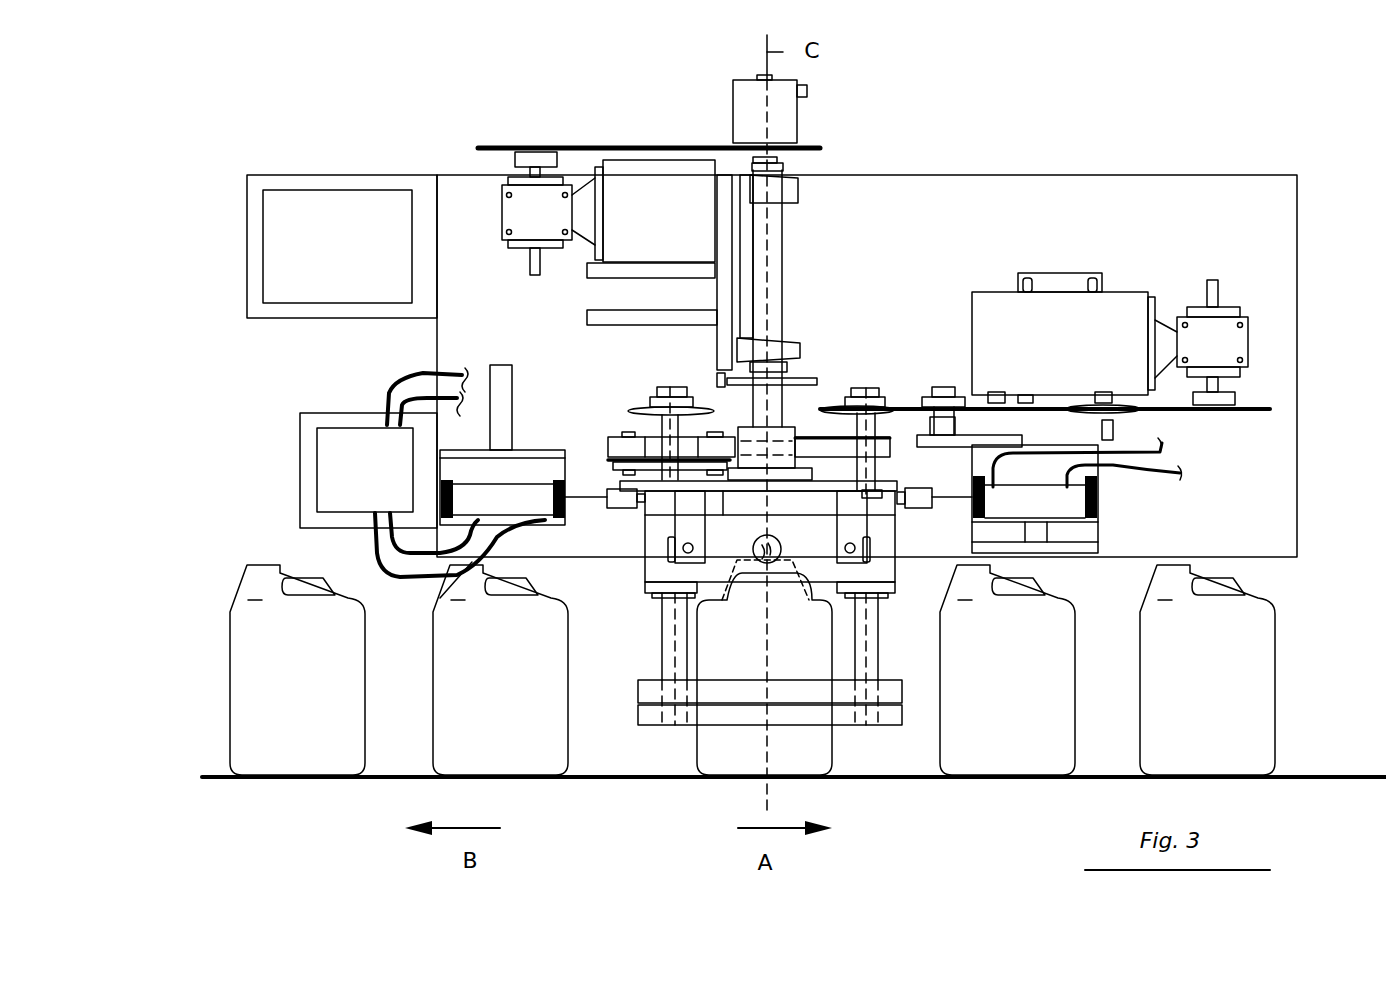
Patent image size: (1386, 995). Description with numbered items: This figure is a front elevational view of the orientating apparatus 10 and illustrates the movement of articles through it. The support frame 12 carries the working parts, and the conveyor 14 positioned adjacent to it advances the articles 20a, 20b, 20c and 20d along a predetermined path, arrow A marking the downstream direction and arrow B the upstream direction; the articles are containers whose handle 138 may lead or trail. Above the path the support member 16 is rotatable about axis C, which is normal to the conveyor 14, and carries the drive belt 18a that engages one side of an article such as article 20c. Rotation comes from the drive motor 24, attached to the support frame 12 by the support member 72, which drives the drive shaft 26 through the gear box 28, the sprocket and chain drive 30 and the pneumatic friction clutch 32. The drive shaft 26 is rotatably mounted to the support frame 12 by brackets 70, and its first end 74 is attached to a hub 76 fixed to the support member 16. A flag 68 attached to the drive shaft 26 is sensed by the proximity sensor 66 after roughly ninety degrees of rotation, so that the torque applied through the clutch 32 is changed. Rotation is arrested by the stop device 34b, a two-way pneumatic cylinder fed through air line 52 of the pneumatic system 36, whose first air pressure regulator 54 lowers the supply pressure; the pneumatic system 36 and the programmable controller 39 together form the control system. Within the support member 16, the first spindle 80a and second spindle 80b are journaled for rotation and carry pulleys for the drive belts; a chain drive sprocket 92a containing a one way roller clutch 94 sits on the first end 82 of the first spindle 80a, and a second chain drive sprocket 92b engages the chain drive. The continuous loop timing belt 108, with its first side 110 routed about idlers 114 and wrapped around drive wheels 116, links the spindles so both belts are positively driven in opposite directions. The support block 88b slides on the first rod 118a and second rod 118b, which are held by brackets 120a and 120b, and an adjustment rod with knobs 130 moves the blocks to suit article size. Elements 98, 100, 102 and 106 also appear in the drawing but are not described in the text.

The orientating apparatus 10 is at (870, 282).
The support frame 12 is at (1287, 193).
The conveyor 14 is at (410, 780).
The support member 16 is at (632, 483).
The drive belt 18a is at (642, 698).
The article 20a is at (232, 670).
The article 20b is at (446, 658).
The article 20c is at (810, 752).
The article 20d is at (1058, 672).
The drive motor 24 is at (667, 175).
The drive shaft 26 is at (782, 262).
The gear box 28 is at (502, 218).
The sprocket and chain drive 30 is at (688, 146).
The clutch 32 is at (800, 103).
The stop device 34b is at (1053, 503).
The pneumatic system 36 is at (317, 460).
The programmable controller 39 is at (297, 190).
The air line 52 is at (410, 385).
The first air pressure regulator 54 is at (400, 380).
The proximity sensor 66 is at (717, 327).
The flag 68 is at (825, 403).
The brackets 70 is at (800, 190).
The support member 72 is at (590, 278).
The first end of shaft 74 is at (755, 425).
The hub 76 is at (740, 428).
The first spindle 80a is at (662, 655).
The second spindle 80b is at (876, 637).
The first end of spindle 82 is at (660, 393).
The second longitudinally extending support block 88b is at (645, 567).
The chain drive sprocket 92a is at (658, 422).
The chain drive sprocket 92b is at (862, 385).
The one way roller clutch 94 is at (628, 407).
The motor 98 is at (1124, 294).
The gear box 100 is at (1248, 340).
The mounting plate 102 is at (1272, 405).
The block 106 is at (1113, 432).
The continuous loop timing belt 108 is at (655, 482).
The first side of timing belt 110 is at (630, 447).
The idlers 114 is at (645, 450).
The drive wheels 116 is at (622, 432).
The first rod 118a is at (688, 556).
The second rod 118b is at (856, 548).
The bracket 120a is at (672, 540).
The bracket 120b is at (870, 560).
The knobs 130 is at (762, 562).
The handle 138 is at (318, 577).